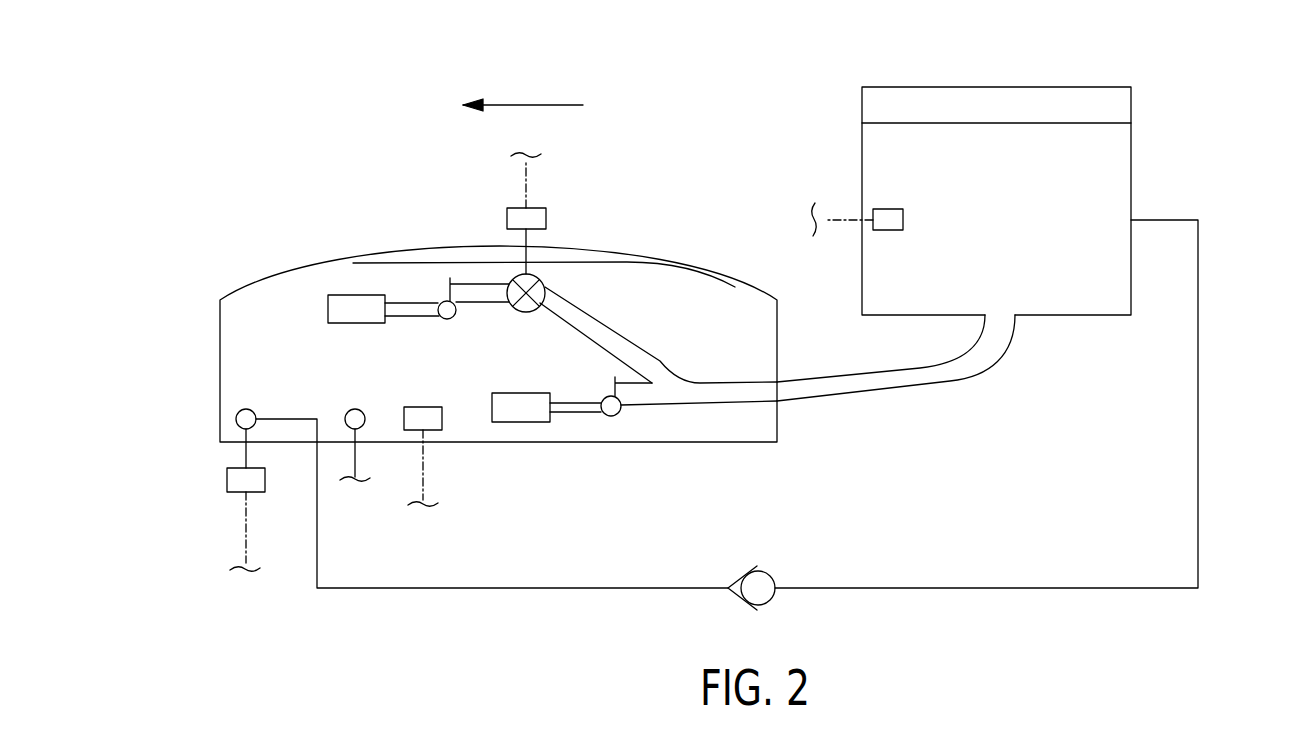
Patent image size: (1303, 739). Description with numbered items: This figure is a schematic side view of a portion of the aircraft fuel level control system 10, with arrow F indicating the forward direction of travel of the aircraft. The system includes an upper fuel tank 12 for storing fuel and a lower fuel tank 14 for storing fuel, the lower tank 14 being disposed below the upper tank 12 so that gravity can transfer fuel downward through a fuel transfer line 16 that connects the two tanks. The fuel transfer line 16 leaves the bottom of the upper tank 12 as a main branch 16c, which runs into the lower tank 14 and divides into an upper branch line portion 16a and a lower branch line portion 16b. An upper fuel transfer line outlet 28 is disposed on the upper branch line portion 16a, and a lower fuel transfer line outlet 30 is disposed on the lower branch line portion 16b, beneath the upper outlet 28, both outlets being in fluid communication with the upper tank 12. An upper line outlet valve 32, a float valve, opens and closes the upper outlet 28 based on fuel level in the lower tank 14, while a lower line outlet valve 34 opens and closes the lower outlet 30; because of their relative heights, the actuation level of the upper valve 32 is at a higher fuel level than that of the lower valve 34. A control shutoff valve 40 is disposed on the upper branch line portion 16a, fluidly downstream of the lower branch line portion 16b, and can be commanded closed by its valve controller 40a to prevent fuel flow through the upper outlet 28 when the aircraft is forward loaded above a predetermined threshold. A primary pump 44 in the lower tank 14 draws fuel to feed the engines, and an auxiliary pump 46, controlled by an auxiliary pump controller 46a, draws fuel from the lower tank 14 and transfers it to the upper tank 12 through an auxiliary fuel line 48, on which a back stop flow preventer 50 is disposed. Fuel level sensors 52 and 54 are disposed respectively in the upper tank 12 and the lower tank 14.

The aircraft fuel level control system 10 is at (186, 576).
The upper fuel tank 12 is at (1132, 173).
The lower fuel tank 14 is at (219, 373).
The fuel transfer line 16 is at (1042, 385).
The upper branch line portion 16a is at (562, 296).
The lower branch line portion 16b is at (647, 398).
The main branch 16c is at (943, 371).
The upper fuel transfer line outlet 28 is at (450, 282).
The lower fuel transfer line outlet 30 is at (612, 385).
The upper line outlet valve 32 is at (327, 310).
The lower line outlet valve 34 is at (522, 422).
The control shutoff valve 40 is at (533, 311).
The valve controller 40a is at (547, 220).
The primary pump 44 is at (363, 413).
The auxiliary pump 46 is at (249, 409).
The auxiliary pump controller 46a is at (227, 479).
The auxiliary fuel line 48 is at (522, 587).
The back stop flow preventer 50 is at (771, 575).
The fuel level sensor 52 is at (904, 216).
The fuel level sensor 54 is at (423, 408).
The forward direction of travel F is at (530, 105).